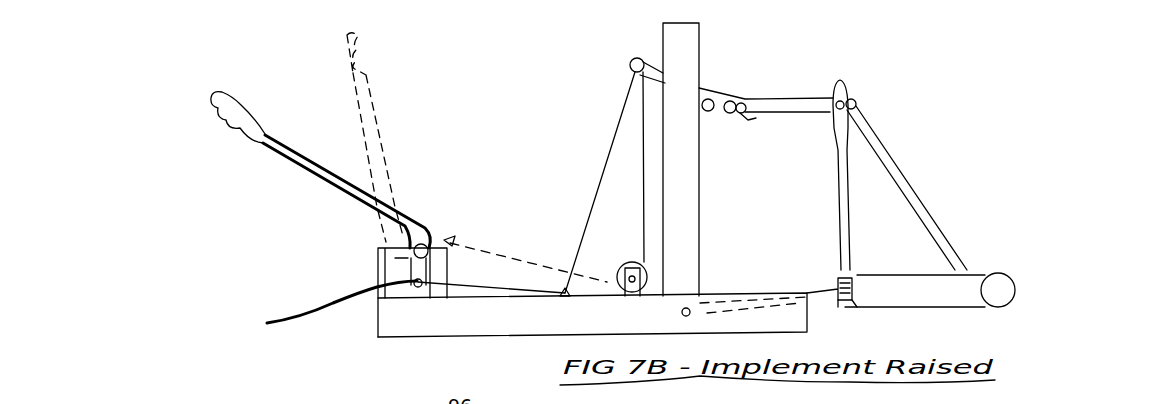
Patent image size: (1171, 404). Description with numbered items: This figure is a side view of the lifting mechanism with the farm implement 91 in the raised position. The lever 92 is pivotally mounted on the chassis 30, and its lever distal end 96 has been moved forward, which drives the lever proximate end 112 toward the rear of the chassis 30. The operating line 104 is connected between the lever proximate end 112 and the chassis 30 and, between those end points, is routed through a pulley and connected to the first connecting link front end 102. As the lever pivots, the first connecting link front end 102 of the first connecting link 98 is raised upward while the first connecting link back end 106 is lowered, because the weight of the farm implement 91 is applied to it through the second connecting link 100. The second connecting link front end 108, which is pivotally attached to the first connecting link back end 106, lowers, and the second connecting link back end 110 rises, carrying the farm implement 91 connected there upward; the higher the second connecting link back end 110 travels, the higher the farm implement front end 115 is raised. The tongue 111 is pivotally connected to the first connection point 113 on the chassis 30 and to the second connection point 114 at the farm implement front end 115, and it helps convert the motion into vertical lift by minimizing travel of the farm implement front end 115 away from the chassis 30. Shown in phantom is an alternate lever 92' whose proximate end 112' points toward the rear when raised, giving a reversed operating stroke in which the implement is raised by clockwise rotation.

The chassis 30 is at (807, 323).
The farm implement 91 is at (997, 280).
The lever 92 is at (341, 191).
The lever 92' is at (404, 137).
The lever distal end 96 is at (233, 112).
The first connecting link 98 is at (706, 92).
The second connecting link 100 is at (803, 105).
The first connecting link front end 102 is at (630, 62).
The operating line 104 is at (600, 192).
The first connecting link back end 106 is at (755, 117).
The second connecting link front end 108 is at (740, 100).
The second connecting link back end 110 is at (857, 100).
The tongue 111 is at (845, 268).
The lever proximate end 112 is at (386, 310).
The lever proximate end 112' is at (525, 245).
The first connection point 113 is at (681, 313).
The second connection point 114 is at (850, 300).
The farm implement front end 115 is at (853, 283).